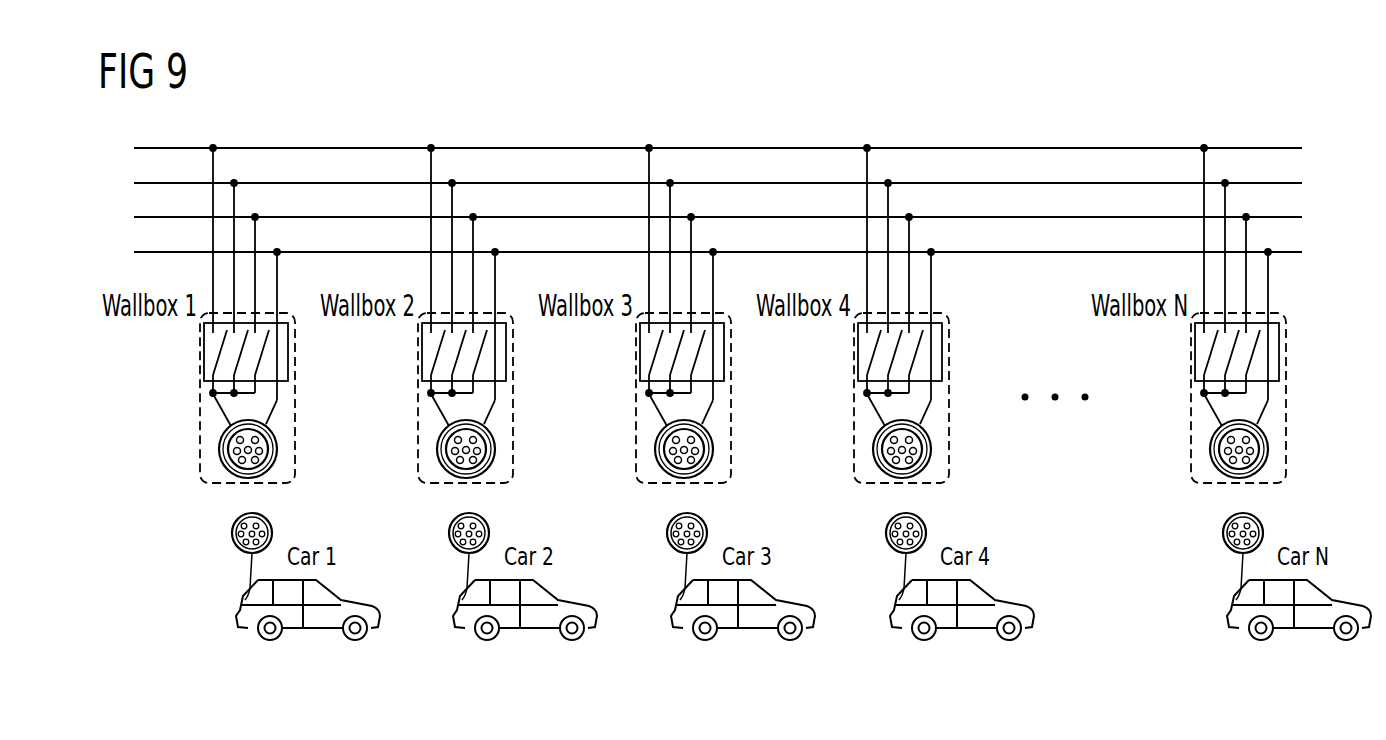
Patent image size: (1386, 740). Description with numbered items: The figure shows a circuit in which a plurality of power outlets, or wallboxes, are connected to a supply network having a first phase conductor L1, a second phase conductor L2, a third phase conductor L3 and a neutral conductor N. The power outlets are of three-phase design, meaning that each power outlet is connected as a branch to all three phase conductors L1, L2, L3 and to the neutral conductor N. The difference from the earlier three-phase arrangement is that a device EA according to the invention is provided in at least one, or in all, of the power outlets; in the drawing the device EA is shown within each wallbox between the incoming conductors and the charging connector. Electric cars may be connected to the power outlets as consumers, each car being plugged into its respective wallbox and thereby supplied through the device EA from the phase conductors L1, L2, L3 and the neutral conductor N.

The first phase conductor L1 is at (698, 150).
The second phase conductor L2 is at (698, 184).
The third phase conductor L3 is at (698, 219).
The neutral conductor N is at (704, 253).
The device EA is at (204, 357).